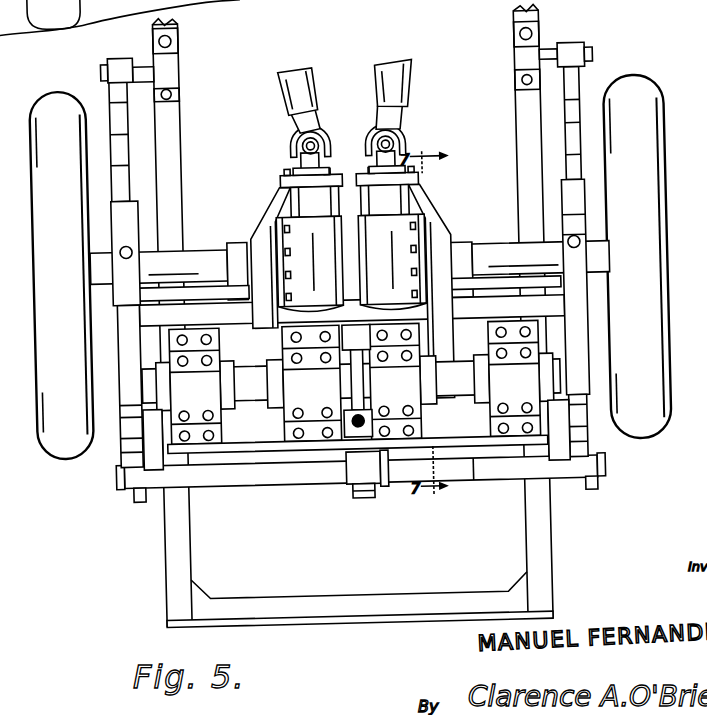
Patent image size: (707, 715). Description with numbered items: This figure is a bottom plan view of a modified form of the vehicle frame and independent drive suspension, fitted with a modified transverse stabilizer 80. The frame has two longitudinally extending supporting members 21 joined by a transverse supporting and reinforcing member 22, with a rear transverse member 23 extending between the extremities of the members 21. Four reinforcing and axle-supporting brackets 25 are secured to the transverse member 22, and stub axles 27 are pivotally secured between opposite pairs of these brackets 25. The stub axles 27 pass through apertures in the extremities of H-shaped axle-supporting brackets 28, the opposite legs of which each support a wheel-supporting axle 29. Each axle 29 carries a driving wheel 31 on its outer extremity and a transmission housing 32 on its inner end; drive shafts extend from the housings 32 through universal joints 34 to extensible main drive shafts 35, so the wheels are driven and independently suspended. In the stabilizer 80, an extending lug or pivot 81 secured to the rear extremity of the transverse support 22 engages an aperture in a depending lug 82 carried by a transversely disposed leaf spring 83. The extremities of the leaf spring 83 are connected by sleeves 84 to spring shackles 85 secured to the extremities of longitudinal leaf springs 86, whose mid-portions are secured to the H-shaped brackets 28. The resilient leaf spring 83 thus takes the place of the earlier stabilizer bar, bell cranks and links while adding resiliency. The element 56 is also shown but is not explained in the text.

The longitudinally extending supporting members 21 is at (173, 120).
The transverse supporting and reinforcing member 22 is at (460, 433).
The rear transverse member 23 is at (344, 597).
The reinforcing and axle-supporting brackets 25 is at (207, 409).
The stub axles 27 is at (132, 406).
The H-shaped axle-supporting brackets 28 is at (156, 316).
The wheel-supporting axle 29 is at (200, 253).
The driving wheel 31 is at (652, 218).
The transmission housings 32 is at (268, 208).
The universal joints 34 is at (326, 130).
The extensible main drive shafts 35 is at (309, 77).
The block 56 is at (127, 61).
The transverse stabilizer 80 is at (430, 490).
The extending lug or pivot 81 is at (326, 452).
The depending lug 82 is at (355, 498).
The leaf spring 83 is at (485, 478).
The sleeves 84 is at (137, 497).
The spring shackles 85 is at (118, 484).
The leaf springs 86 is at (120, 123).